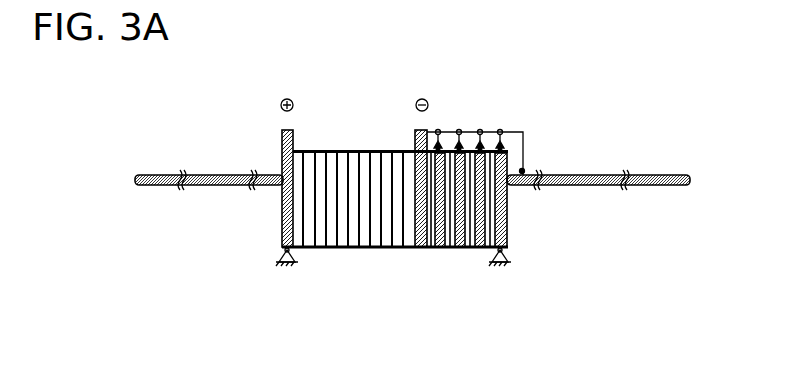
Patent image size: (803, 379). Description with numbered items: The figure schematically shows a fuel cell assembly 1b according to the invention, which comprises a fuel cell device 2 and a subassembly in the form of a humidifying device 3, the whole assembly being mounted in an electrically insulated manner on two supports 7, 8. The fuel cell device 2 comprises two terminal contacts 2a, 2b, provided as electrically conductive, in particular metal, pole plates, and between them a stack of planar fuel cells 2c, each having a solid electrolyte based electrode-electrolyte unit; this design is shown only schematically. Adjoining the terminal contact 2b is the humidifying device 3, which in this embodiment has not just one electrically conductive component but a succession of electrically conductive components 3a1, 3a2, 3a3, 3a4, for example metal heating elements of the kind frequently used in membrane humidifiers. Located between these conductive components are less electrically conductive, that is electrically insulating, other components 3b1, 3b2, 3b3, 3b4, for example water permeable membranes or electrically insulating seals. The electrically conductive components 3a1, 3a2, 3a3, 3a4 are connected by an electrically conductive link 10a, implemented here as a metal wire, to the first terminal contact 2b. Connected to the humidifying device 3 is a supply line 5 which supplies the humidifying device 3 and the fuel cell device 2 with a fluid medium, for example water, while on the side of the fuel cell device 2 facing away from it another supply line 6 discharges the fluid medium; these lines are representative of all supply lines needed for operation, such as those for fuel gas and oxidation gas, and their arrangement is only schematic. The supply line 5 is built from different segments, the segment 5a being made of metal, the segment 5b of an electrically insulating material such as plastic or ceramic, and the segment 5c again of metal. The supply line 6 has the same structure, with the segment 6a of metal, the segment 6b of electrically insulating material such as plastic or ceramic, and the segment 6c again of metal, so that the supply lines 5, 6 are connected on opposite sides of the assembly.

The fuel cell assembly 1b is at (553, 105).
The fuel cell device 2 is at (394, 195).
The terminal contact 2a is at (290, 129).
The first terminal contact 2b is at (418, 130).
The planar fuel cells 2c is at (368, 250).
The humidifying device 3 is at (498, 193).
The electrically conductive component 3a1 is at (440, 250).
The electrically conductive component 3a2 is at (458, 250).
The electrically conductive component 3a3 is at (480, 250).
The electrically conductive component 3a4 is at (505, 252).
The electrically insulating other component 3b1 is at (438, 129).
The electrically insulating other component 3b2 is at (459, 129).
The electrically insulating other component 3b3 is at (480, 129).
The electrically insulating other component 3b4 is at (500, 129).
The electrically conductive link 10a is at (528, 140).
The supply line 5 is at (598, 224).
The segment 5a is at (522, 188).
The segment 5b is at (561, 188).
The segment 5c is at (645, 188).
The supply line 6 is at (209, 226).
The segment 6a is at (260, 188).
The segment 6b is at (216, 188).
The segment 6c is at (154, 188).
The support 7 is at (500, 268).
The support 8 is at (281, 259).